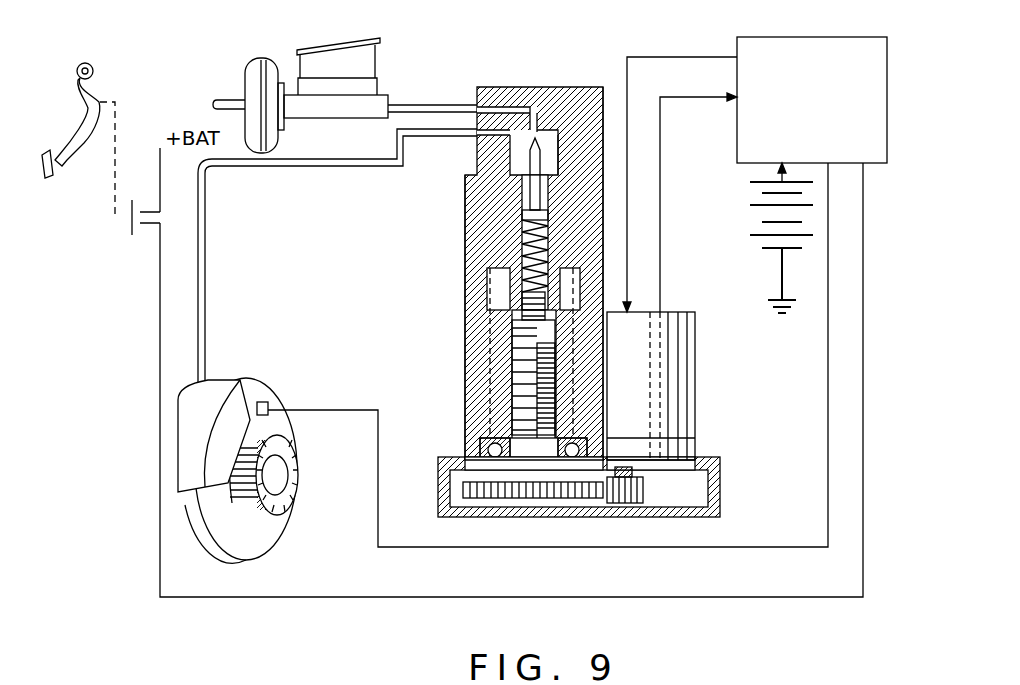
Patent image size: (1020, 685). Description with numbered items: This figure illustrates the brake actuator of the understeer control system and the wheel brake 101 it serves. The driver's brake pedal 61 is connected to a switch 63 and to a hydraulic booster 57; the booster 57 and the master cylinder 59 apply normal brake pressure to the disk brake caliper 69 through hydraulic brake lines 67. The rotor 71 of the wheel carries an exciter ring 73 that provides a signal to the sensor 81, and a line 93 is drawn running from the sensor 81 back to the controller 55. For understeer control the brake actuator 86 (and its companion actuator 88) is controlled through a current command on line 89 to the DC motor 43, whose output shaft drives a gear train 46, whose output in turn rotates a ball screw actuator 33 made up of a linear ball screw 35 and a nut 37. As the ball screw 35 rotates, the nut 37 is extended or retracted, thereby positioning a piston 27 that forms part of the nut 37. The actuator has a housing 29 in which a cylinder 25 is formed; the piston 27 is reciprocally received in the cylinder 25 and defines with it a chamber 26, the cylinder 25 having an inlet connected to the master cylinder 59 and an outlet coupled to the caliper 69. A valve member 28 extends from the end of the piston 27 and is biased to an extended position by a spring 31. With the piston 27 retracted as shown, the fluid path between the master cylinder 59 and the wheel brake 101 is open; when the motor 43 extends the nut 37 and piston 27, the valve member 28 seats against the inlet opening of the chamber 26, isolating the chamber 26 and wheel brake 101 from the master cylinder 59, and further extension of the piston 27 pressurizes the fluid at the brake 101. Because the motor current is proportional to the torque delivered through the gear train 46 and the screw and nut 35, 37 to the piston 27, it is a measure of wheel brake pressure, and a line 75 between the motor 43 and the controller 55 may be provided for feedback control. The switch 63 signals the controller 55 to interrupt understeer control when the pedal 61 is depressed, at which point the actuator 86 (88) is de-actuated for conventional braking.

The cylinder 25 is at (437, 112).
The chamber 26 is at (547, 150).
The piston 27 is at (465, 233).
The valve member 28 is at (533, 158).
The housing 29 is at (587, 200).
The spring 31 is at (545, 243).
The ball screw actuator 33 is at (490, 340).
The linear ball screw 35 is at (525, 390).
The nut 37 is at (487, 397).
The DC motor 43 is at (673, 417).
The gear train 46 is at (505, 487).
The controller 55 is at (743, 156).
The hydraulic booster 57 is at (253, 83).
The master cylinder 59 is at (362, 100).
The brake pedal 61 is at (72, 163).
The switch 63 is at (133, 233).
The hydraulic brake lines 67 is at (320, 166).
The disk brake caliper 69 is at (200, 423).
The rotor 71 is at (243, 532).
The exciter ring 73 is at (277, 455).
The line 75 is at (702, 100).
The sensor 81 is at (247, 375).
The brake actuator 86 is at (455, 263).
The brake actuator 88 is at (625, 485).
The line 89 is at (695, 55).
The sensor wire 93 is at (827, 487).
The wheel brake 101 is at (232, 428).